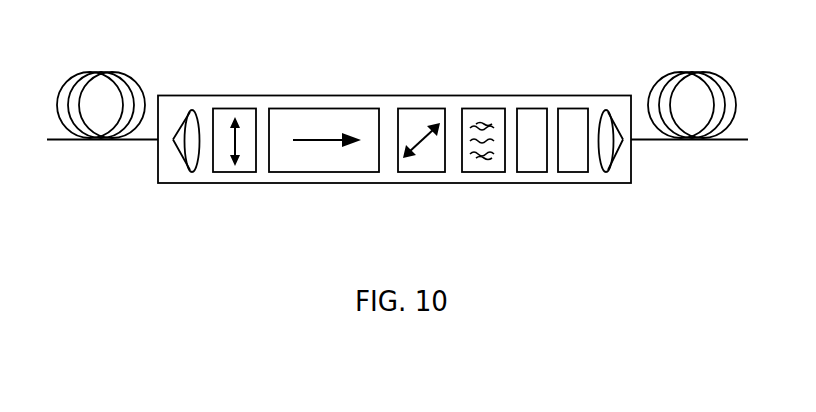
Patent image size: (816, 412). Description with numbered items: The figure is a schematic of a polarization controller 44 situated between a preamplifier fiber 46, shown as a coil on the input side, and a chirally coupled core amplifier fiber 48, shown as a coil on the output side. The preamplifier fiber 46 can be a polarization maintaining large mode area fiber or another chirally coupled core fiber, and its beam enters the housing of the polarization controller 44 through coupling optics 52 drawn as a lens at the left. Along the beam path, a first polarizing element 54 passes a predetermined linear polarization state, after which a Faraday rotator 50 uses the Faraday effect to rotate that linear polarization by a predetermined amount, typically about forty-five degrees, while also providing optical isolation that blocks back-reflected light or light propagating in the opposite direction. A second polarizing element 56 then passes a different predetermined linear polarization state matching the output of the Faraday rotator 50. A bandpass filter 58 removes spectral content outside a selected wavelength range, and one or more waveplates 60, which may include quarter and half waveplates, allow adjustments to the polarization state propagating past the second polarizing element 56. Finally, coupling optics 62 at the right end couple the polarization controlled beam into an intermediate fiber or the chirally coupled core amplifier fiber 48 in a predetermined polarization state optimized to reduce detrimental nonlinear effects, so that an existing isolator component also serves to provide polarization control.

The polarization controller 44 is at (308, 183).
The preamplifier fiber 46 is at (100, 72).
The chirally coupled core amplifier fiber 48 is at (692, 72).
The Faraday rotator 50 is at (315, 109).
The coupling optics 52 is at (192, 110).
The first polarizing element 54 is at (225, 108).
The second polarizing element 56 is at (410, 118).
The bandpass filter 58 is at (480, 163).
The waveplates 60 is at (532, 109).
The coupling optics 62 is at (605, 172).